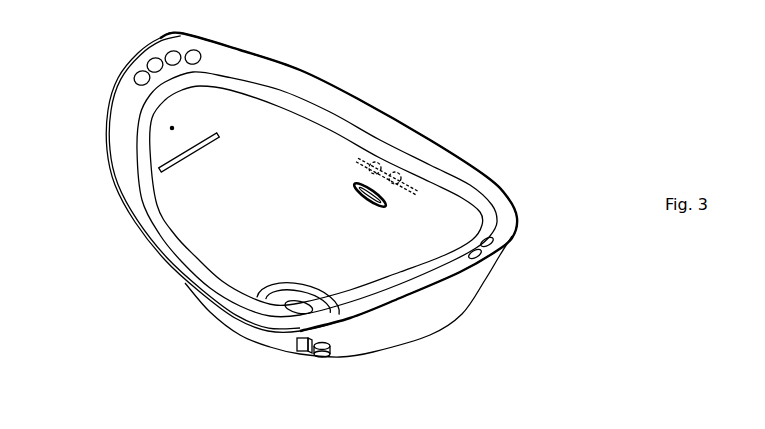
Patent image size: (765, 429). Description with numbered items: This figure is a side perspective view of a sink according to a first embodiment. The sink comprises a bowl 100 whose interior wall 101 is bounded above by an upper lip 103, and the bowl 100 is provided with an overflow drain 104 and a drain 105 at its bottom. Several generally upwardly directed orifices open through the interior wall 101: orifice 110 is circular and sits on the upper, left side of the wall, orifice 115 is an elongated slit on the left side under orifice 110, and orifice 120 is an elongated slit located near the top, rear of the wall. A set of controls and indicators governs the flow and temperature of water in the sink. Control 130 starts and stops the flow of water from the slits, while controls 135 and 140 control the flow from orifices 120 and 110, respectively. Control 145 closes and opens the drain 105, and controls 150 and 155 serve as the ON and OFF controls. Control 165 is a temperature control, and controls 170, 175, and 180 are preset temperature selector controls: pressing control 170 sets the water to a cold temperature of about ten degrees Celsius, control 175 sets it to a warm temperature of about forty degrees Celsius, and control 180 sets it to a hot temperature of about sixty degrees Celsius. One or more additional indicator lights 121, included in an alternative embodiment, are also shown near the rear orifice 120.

The bowl 100 is at (143, 239).
The interior wall 101 is at (468, 301).
The upper lip 103 is at (360, 98).
The overflow drain 104 is at (387, 207).
The drain 105 is at (293, 305).
The orifice 110 is at (170, 129).
The orifice 115 is at (207, 138).
The orifice 120 is at (390, 177).
The indicator lights 121 is at (377, 166).
The control 130 is at (135, 75).
The control 135 is at (148, 60).
The control 140 is at (170, 50).
The control 145 is at (192, 48).
The ON control 150 is at (488, 237).
The OFF control 155 is at (482, 251).
The temperature control 165 is at (300, 351).
The preset temperature selector control 170 is at (330, 346).
The preset temperature selector control 175 is at (330, 354).
The preset temperature selector control 180 is at (326, 358).